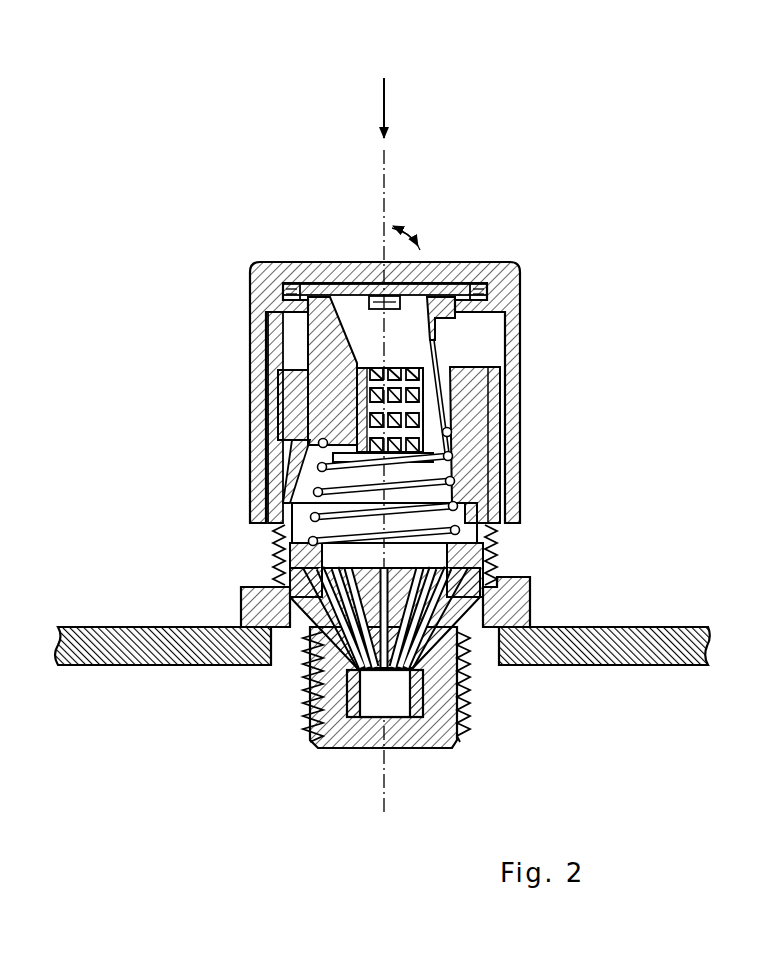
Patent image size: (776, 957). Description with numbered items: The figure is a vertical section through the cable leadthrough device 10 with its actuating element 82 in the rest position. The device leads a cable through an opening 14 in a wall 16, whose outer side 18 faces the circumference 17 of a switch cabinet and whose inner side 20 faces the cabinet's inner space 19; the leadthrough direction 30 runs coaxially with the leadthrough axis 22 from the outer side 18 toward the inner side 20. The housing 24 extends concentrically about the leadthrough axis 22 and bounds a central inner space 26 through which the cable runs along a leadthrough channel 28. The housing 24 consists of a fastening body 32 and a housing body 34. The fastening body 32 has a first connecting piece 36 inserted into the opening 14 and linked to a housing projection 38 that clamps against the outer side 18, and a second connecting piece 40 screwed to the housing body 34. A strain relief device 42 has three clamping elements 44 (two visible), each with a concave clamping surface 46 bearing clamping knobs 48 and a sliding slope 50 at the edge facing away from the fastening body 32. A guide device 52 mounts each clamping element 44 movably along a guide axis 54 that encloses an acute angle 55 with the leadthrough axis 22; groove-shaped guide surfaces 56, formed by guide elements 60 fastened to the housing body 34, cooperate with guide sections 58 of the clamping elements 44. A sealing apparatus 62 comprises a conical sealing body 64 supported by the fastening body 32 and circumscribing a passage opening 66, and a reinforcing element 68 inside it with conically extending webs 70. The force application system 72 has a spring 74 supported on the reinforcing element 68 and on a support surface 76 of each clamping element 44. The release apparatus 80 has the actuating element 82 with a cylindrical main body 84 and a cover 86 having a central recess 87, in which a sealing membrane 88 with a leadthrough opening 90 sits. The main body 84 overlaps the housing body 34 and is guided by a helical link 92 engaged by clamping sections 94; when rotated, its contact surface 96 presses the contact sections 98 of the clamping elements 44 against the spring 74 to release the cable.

The cable leadthrough device 10 is at (308, 188).
The opening 14 is at (272, 652).
The wall 16 is at (392, 644).
The circumference 17 is at (54, 532).
The outer side 18 is at (628, 622).
The inner space 19 is at (84, 774).
The inner side 20 is at (630, 670).
The leadthrough axis 22 is at (386, 178).
The housing 24 is at (632, 456).
The inner space 26 is at (363, 742).
The leadthrough channel 28 is at (372, 252).
The leadthrough direction 30 is at (388, 96).
The fastening body 32 is at (393, 728).
The housing body 34 is at (492, 562).
The first connecting piece 36 is at (306, 690).
The housing projection 38 is at (250, 608).
The second connecting piece 40 is at (486, 572).
The strain relief device 42 is at (516, 270).
The clamping element 44 is at (383, 375).
The clamping surface 46 is at (452, 436).
The clamping knob 48 is at (432, 414).
The sliding slope 50 is at (405, 342).
The guide device 52 is at (283, 445).
The guide axis 54 is at (436, 226).
The acute angle 55 is at (408, 232).
The guide surface 56 is at (335, 497).
The guide section 58 is at (420, 398).
The guide element 60 is at (478, 420).
The sealing apparatus 62 is at (420, 738).
The sealing body 64 is at (422, 649).
The passage opening 66 is at (393, 708).
The reinforcing element 68 is at (276, 557).
The web 70 is at (420, 628).
The force application system 72 is at (388, 487).
The spring 74 is at (456, 480).
The support surface 76 is at (322, 466).
The release apparatus 80 is at (291, 263).
The actuating element 82 is at (437, 366).
The cylindrical main body 84 is at (510, 315).
The cover 86 is at (480, 268).
The central recess 87 is at (348, 272).
The sealing membrane 88 is at (330, 287).
The leadthrough opening 90 is at (372, 295).
The link 92 is at (278, 392).
The clamping section 94 is at (278, 420).
The contact surface 96 is at (308, 313).
The contact section 98 is at (298, 291).